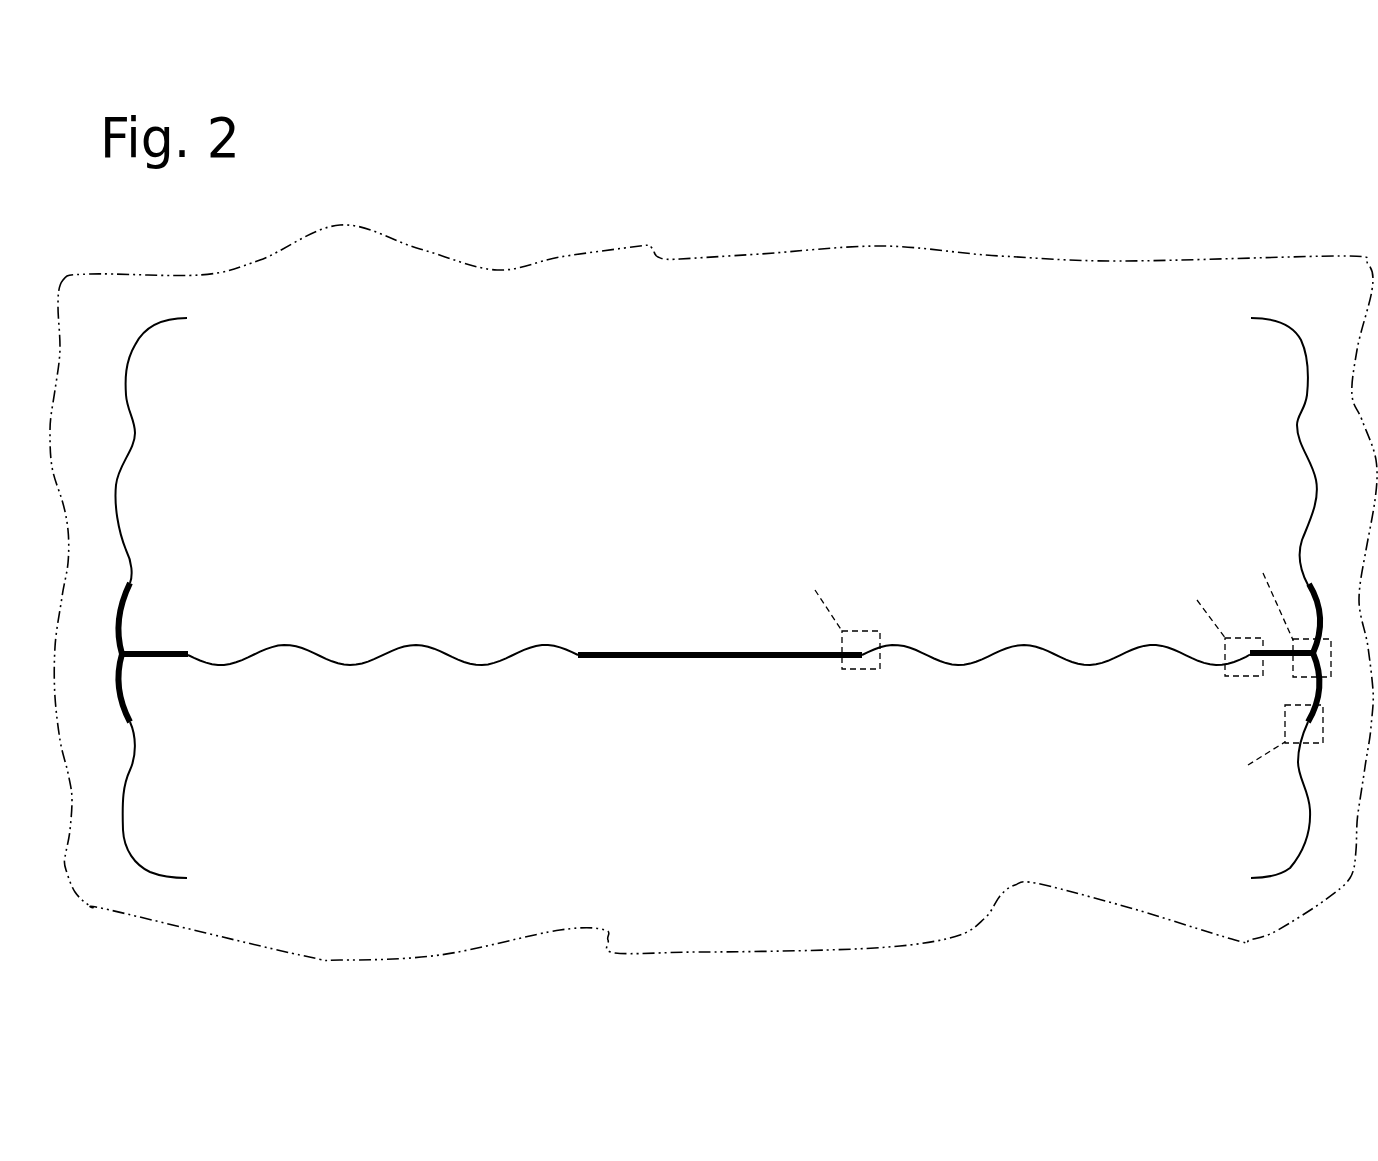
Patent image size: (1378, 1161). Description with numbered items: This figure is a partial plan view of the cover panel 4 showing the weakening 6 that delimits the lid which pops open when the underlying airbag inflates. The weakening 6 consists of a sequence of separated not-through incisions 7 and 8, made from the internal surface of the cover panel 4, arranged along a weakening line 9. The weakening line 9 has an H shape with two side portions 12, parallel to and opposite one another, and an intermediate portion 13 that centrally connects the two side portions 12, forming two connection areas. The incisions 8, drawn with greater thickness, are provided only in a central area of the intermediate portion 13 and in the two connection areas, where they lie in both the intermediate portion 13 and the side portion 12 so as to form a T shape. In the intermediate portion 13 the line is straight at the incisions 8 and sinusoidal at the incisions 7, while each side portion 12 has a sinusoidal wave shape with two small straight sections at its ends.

The cover panel 4 is at (806, 293).
The weakening 6 is at (1232, 188).
The incisions 7 is at (135, 433).
The incisions 8 is at (120, 692).
The weakening line 9 is at (464, 900).
The side portions 12 is at (210, 509).
The intermediate portion 13 is at (620, 538).